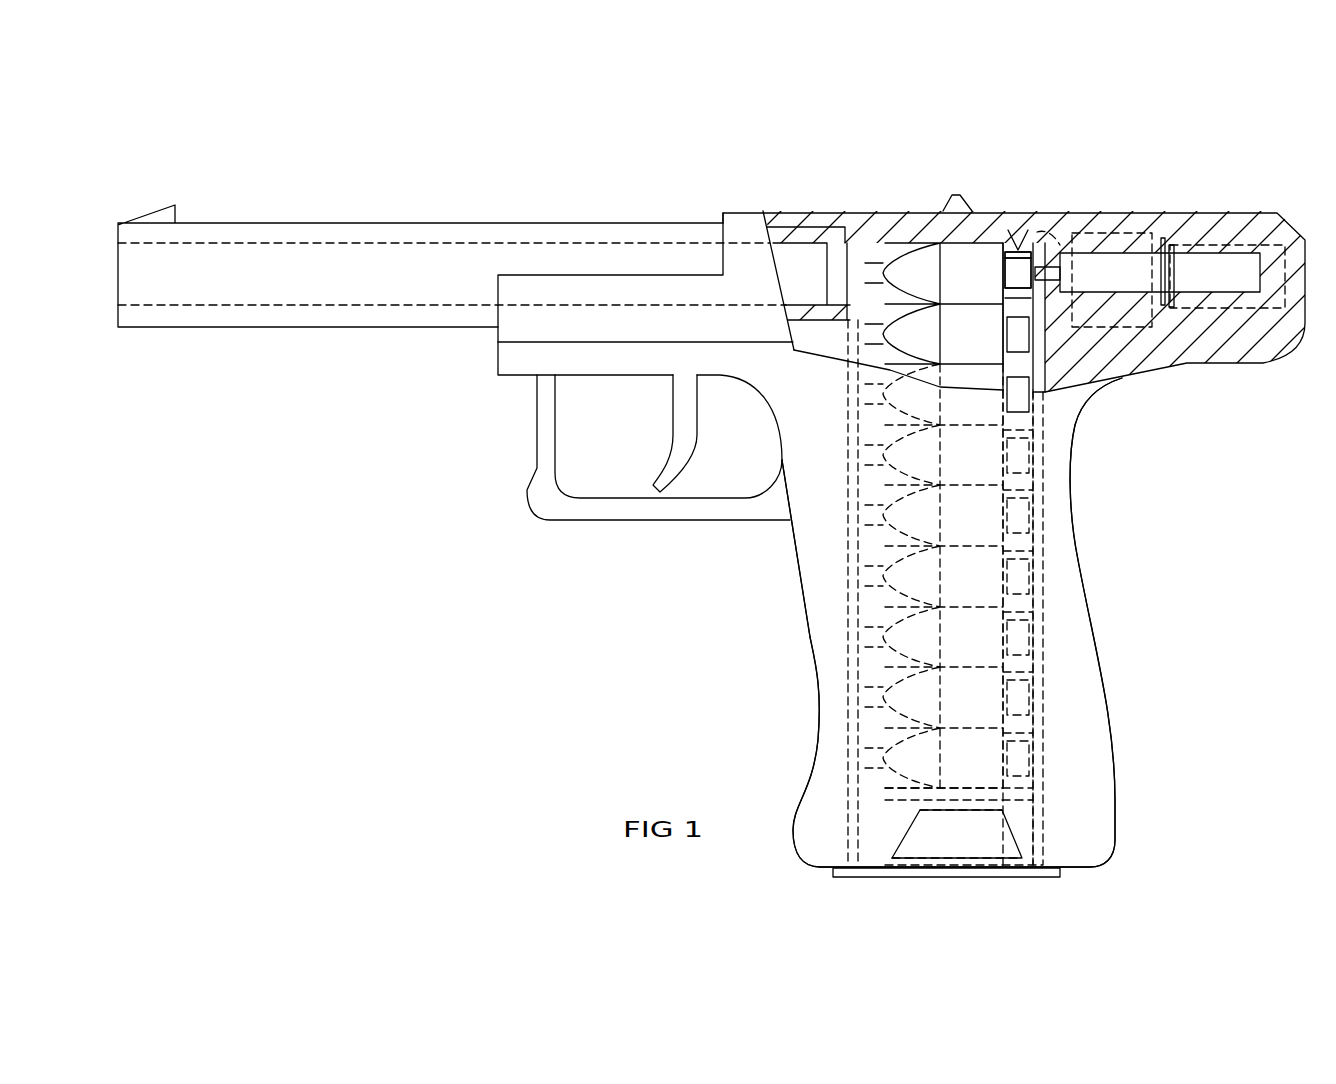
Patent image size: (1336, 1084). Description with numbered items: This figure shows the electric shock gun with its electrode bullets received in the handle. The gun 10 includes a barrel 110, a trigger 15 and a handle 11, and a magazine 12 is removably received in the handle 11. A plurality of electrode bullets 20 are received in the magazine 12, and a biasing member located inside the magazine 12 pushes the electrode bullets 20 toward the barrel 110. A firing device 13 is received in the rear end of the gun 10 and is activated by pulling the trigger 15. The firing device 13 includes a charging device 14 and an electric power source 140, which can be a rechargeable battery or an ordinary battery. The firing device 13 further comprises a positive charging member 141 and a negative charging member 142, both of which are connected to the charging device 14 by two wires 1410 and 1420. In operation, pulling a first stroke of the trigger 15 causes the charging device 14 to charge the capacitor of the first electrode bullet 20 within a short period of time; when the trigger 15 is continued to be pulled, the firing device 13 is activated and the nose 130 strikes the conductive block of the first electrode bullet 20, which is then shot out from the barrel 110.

The gun 10 is at (642, 186).
The barrel 110 is at (368, 262).
The handle 11 is at (1080, 635).
The magazine 12 is at (1027, 870).
The firing device 13 is at (1152, 258).
The charging device 14 is at (1102, 243).
The electric power source 140 is at (1210, 245).
The positive charging member 141 is at (1023, 227).
The negative charging member 142 is at (993, 230).
The wire 1410 is at (1043, 227).
The wire 1420 is at (1070, 233).
The nose 130 is at (1050, 288).
The trigger 15 is at (684, 432).
The electrode bullet 20 is at (923, 274).